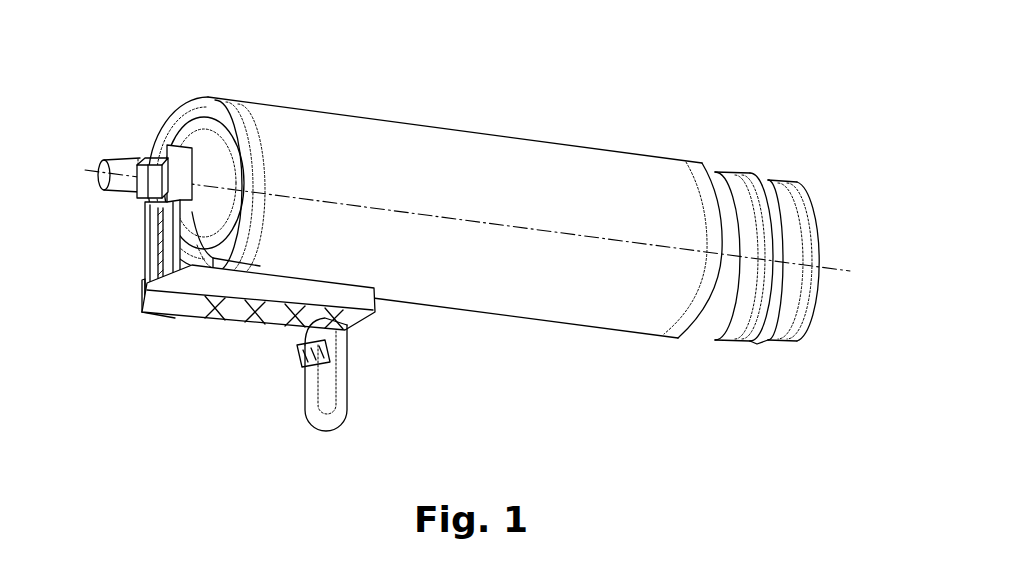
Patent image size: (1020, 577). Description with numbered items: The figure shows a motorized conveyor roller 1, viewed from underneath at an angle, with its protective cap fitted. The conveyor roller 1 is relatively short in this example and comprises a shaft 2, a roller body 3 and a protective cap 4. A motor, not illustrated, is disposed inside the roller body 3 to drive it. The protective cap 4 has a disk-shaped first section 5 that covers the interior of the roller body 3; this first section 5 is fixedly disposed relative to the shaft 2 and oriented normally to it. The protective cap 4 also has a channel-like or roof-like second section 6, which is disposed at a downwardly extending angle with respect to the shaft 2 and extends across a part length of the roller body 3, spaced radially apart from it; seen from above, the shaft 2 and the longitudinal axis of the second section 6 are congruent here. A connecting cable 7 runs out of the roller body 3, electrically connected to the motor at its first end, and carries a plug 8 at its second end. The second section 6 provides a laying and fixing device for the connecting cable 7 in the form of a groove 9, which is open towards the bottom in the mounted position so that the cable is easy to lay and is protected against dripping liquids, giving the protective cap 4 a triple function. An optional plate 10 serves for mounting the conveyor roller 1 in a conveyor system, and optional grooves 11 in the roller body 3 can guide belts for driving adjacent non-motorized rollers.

The conveyor roller 1 is at (464, 223).
The shaft 2 is at (130, 168).
The roller body 3 is at (400, 137).
The protective cap 4 is at (237, 270).
The first section 5 is at (162, 98).
The second section 6 is at (247, 333).
The connecting cable 7 is at (342, 395).
The plug 8 is at (313, 365).
The groove 9 is at (150, 279).
The plate 10 is at (147, 203).
The grooves 11 is at (748, 339).